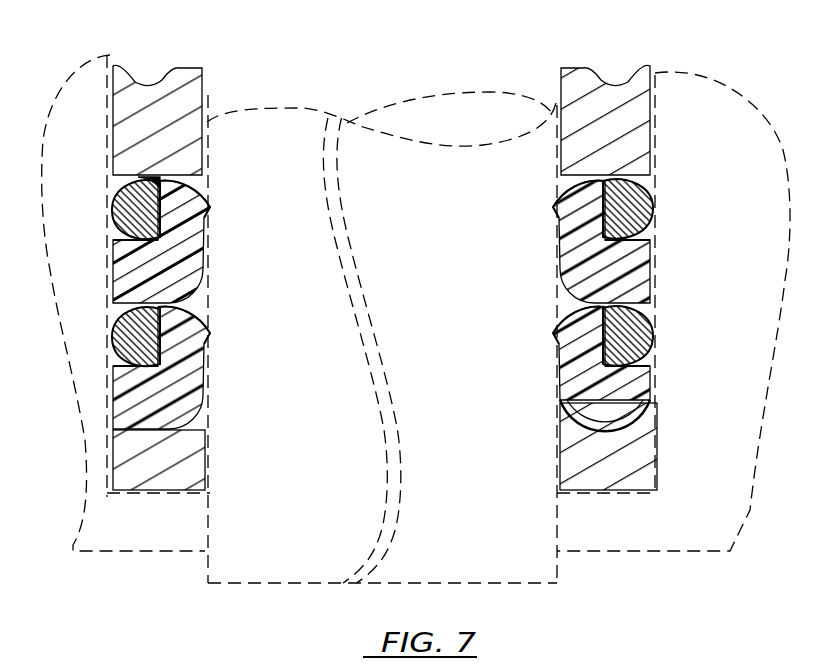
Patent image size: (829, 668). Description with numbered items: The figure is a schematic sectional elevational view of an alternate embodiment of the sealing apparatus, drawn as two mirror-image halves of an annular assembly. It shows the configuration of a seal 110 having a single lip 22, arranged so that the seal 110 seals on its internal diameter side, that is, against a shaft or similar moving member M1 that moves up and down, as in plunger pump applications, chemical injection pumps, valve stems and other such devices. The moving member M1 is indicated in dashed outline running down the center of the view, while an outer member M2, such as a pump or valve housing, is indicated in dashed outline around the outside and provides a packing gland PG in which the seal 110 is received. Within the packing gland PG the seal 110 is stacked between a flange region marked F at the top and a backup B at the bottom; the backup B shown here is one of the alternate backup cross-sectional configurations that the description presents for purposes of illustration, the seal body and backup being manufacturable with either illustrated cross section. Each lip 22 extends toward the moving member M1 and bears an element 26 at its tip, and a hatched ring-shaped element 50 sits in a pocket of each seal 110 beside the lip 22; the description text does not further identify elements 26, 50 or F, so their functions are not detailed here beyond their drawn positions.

The lip 22 is at (192, 242).
The sealing lip 26 is at (210, 207).
The O-ring 50 is at (118, 222).
The seal 110 is at (112, 279).
The flange F is at (172, 76).
The backup B is at (145, 472).
The packing gland PG is at (113, 184).
The moving member M1 is at (526, 606).
The outer member M2 is at (697, 76).